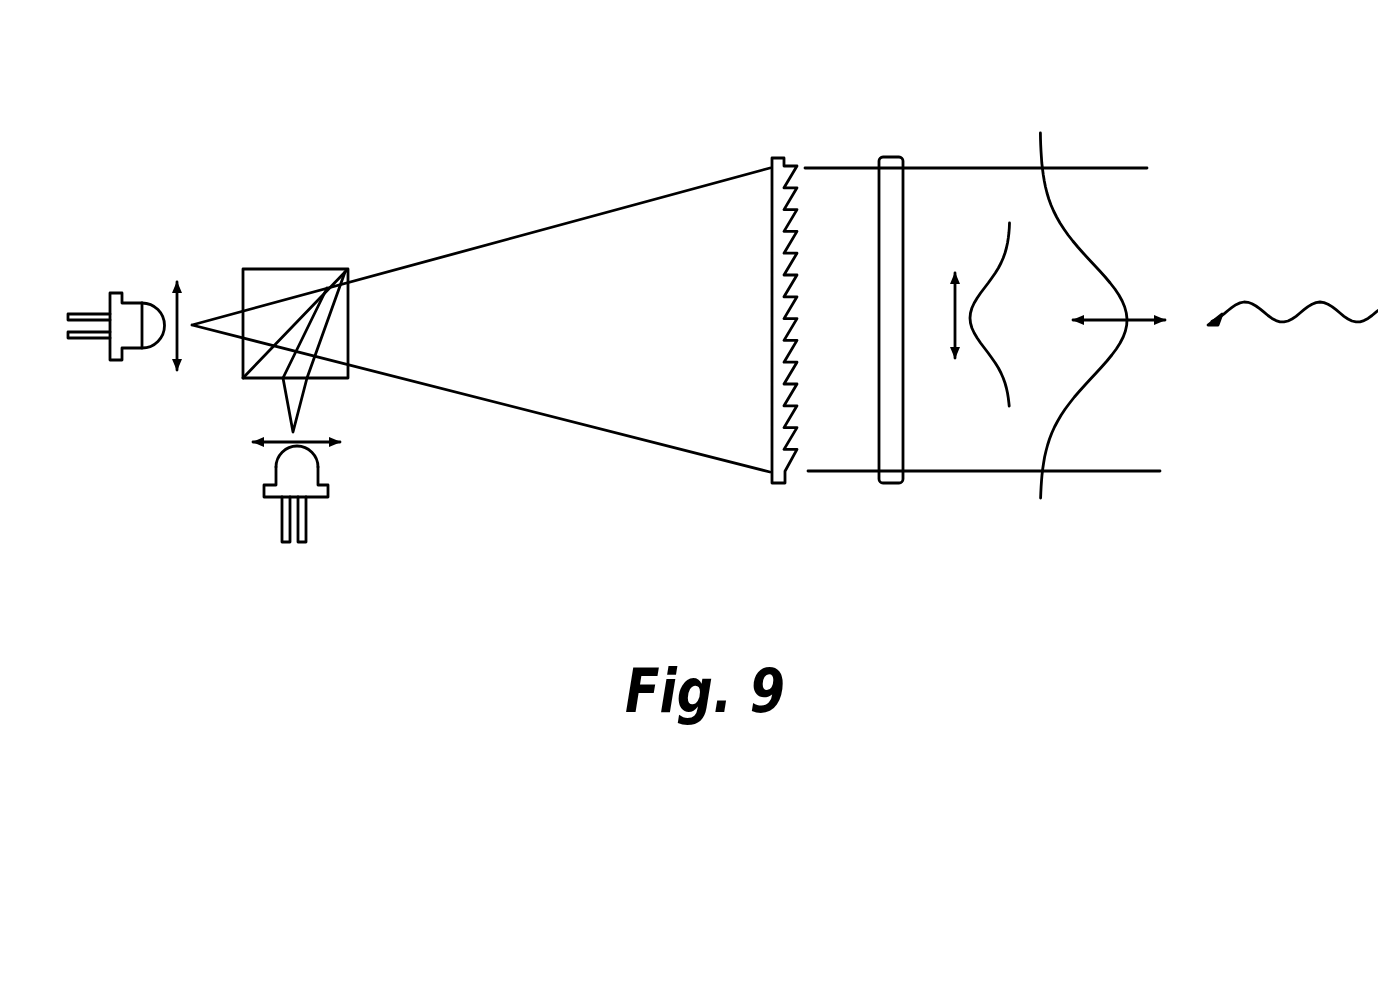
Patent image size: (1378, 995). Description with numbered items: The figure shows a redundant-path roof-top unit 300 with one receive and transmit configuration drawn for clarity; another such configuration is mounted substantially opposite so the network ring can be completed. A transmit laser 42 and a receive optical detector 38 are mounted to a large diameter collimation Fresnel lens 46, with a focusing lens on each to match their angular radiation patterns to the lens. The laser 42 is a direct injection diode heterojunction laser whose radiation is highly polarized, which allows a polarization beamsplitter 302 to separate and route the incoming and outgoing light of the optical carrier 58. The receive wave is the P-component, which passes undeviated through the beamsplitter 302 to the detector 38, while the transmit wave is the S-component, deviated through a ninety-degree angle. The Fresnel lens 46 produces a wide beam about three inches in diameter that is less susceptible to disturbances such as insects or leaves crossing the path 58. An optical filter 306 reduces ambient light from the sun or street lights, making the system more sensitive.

The receive optical detector 38 is at (116, 292).
The redundant-path roof-top unit 300 is at (172, 398).
The polarization beamsplitter 302 is at (297, 268).
The transmit laser 42 is at (328, 497).
The collimation Fresnel lens 46 is at (784, 168).
The optical filter 306 is at (906, 198).
The optical carrier 58 is at (1117, 168).